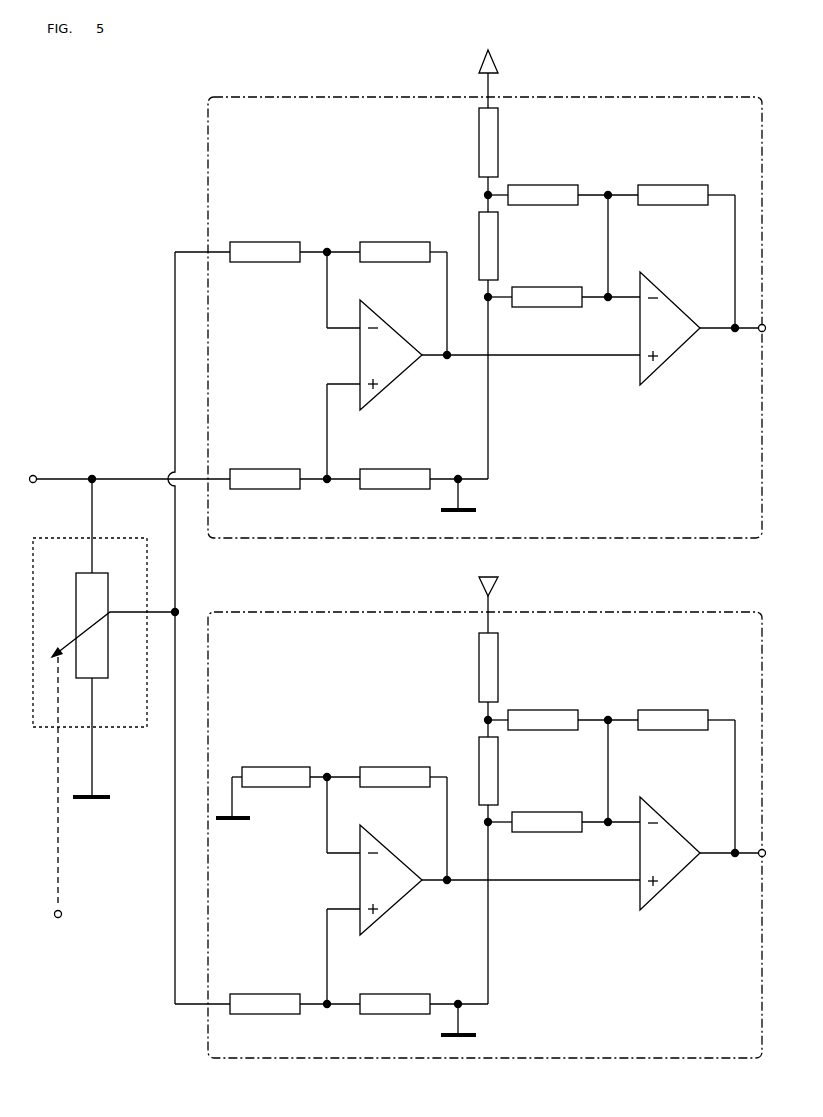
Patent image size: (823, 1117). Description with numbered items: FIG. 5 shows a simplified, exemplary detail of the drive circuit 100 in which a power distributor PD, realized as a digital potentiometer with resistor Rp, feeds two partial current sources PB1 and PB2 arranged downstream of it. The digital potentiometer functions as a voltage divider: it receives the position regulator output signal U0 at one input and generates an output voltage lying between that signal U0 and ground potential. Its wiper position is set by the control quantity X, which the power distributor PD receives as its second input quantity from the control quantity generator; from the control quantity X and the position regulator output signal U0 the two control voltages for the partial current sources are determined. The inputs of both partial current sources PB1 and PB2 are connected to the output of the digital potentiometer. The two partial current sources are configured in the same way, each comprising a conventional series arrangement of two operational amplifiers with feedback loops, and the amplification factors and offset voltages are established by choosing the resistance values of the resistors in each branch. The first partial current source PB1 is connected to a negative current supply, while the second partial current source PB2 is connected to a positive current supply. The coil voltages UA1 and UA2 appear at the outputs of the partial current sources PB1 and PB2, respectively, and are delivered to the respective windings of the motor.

The position detector 100 is at (106, 714).
The power distributor PD is at (106, 638).
The potentiometer resistor Rp is at (79, 625).
The first partial current source PB1 is at (470, 814).
The second partial current source PB2 is at (470, 291).
The position regulator output signal U0 is at (130, 468).
The first coil voltage UA1 is at (733, 866).
The second coil voltage UA2 is at (733, 341).
The control quantity X is at (57, 803).